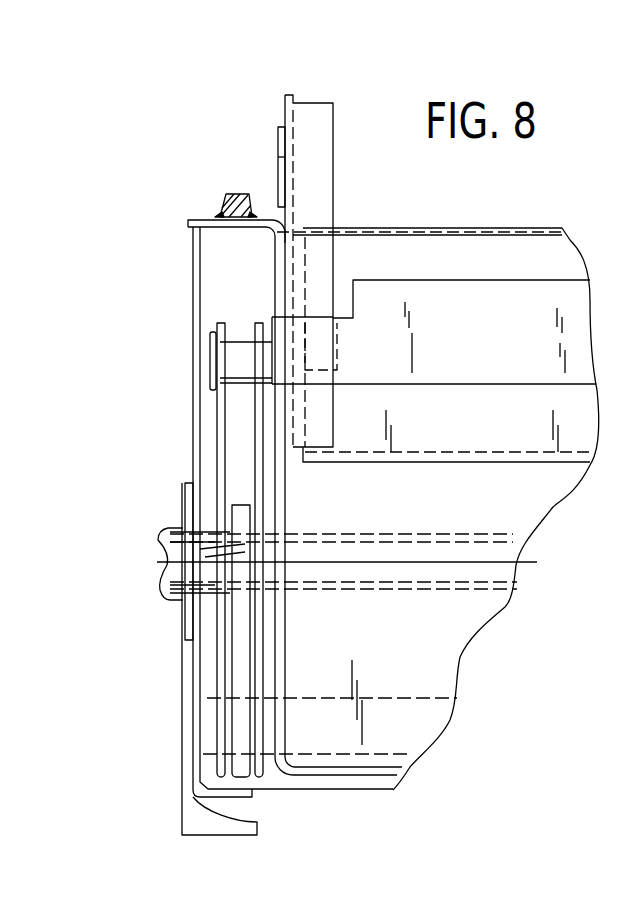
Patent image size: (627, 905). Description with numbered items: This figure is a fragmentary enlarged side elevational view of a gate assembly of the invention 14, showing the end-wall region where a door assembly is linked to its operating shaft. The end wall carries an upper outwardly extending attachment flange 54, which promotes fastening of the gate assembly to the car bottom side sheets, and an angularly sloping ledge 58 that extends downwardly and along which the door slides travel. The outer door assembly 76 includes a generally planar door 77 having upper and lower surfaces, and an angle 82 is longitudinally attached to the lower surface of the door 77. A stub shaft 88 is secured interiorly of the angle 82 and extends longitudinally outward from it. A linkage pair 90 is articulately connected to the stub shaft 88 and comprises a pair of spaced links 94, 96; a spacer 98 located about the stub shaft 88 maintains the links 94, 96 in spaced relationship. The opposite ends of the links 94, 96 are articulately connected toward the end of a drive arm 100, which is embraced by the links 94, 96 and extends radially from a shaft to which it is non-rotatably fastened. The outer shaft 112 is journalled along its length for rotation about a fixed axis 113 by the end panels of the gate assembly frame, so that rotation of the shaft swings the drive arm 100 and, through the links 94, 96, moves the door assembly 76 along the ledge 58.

The apparatus 14 is at (616, 746).
The attachment flange 54 is at (203, 220).
The sloping ledge 58 is at (323, 127).
The door assembly 76 is at (504, 665).
The door 77 is at (540, 495).
The angle 82 is at (517, 278).
The stub shaft 88 is at (270, 358).
The linkage pair 90 is at (260, 782).
The link 94 is at (260, 482).
The link 96 is at (222, 442).
The spacer 98 is at (240, 355).
The drive arm 100 is at (240, 627).
The outer shaft 112 is at (385, 532).
The fixed axis 113 is at (523, 562).